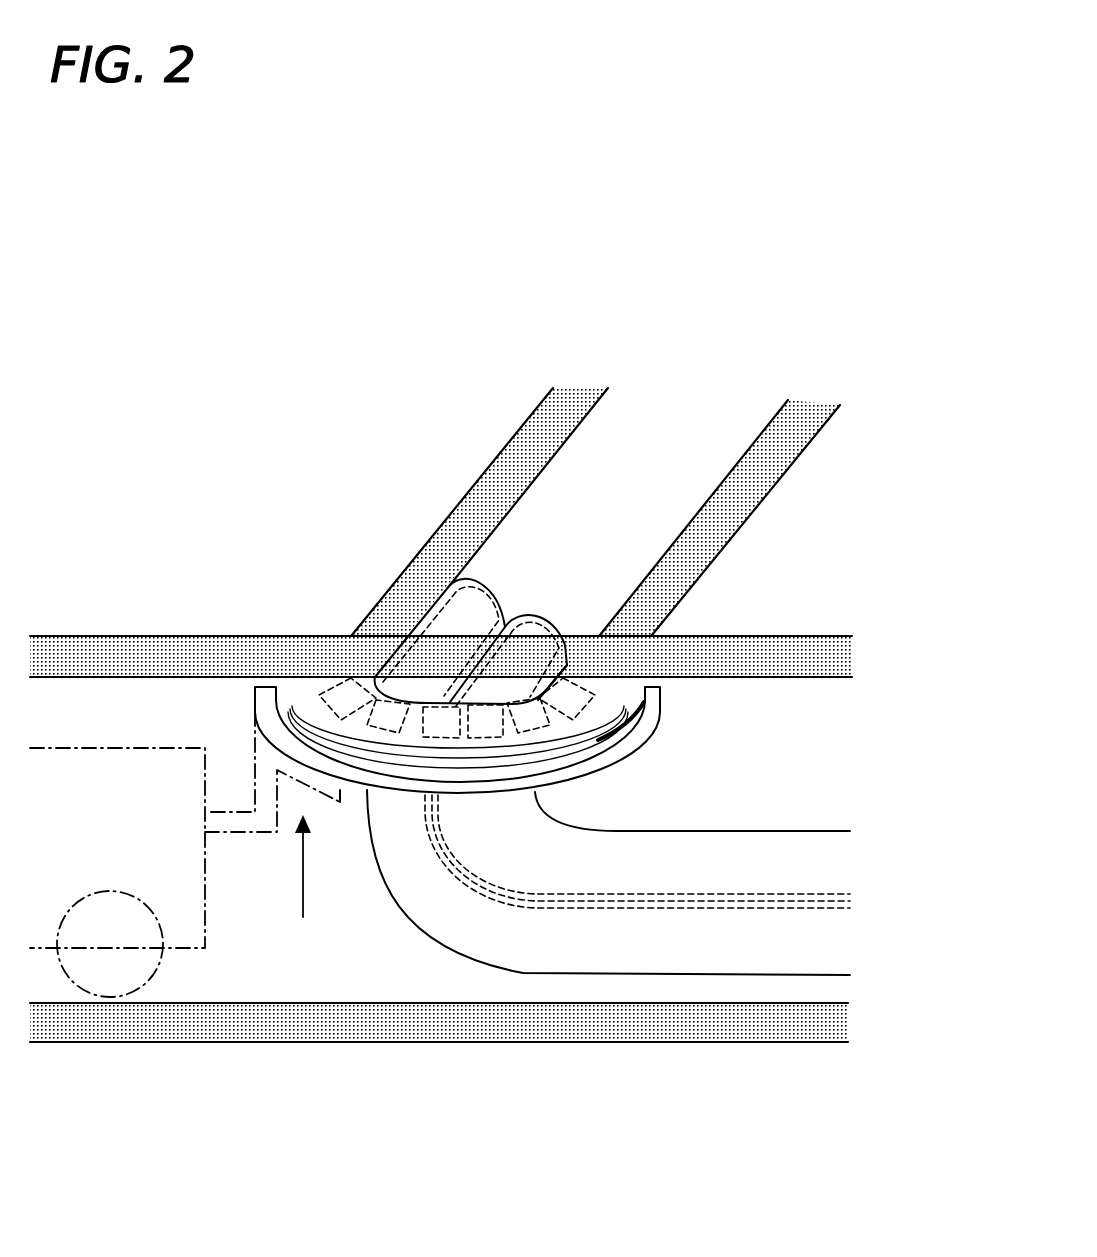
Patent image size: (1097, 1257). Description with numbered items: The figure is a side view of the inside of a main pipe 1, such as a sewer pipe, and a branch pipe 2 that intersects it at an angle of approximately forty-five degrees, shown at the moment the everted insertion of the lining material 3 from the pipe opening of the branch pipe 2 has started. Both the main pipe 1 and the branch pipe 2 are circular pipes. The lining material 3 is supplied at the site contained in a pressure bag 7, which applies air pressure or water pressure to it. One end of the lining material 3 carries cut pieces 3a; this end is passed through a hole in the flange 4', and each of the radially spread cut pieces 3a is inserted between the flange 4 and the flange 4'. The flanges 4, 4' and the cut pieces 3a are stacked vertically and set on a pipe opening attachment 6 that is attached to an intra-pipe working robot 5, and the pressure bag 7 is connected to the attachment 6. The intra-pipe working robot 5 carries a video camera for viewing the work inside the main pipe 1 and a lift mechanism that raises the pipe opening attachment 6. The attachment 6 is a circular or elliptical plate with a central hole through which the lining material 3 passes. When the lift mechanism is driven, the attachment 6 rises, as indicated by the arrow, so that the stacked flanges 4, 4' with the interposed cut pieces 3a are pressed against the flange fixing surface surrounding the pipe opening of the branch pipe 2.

The main pipe 1 is at (190, 648).
The branch pipe 2 is at (531, 444).
The lining material 3 is at (457, 617).
The cut pieces 3a is at (343, 697).
The flange 4 is at (554, 629).
The flange 4' is at (513, 735).
The intra-pipe working robot 5 is at (87, 762).
The pipe opening attachment 6 is at (663, 700).
The pressure bag 7 is at (523, 973).